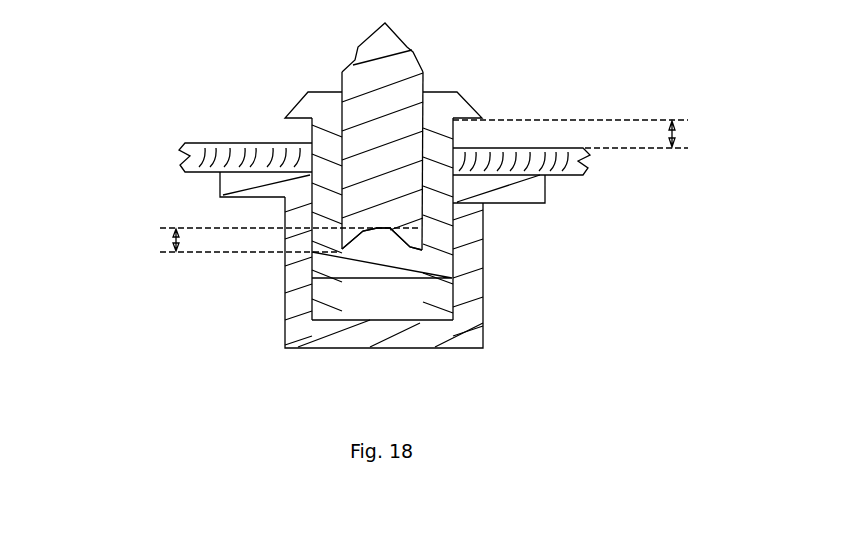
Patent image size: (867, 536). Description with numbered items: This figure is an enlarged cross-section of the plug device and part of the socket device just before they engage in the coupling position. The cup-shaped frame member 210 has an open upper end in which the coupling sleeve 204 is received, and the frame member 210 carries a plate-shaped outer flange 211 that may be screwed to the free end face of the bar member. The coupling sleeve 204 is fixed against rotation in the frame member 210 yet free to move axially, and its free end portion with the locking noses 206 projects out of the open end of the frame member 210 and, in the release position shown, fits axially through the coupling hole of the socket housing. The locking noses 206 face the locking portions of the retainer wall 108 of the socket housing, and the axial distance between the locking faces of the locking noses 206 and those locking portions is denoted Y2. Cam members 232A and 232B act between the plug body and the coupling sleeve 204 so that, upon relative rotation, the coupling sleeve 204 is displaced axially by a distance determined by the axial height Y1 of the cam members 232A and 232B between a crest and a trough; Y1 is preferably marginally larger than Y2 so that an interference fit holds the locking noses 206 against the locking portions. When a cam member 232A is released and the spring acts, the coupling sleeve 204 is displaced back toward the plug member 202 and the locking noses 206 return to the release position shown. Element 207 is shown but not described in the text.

The plug member 202 is at (368, 109).
The coupling sleeve 204 is at (330, 127).
The locking noses 206 is at (457, 108).
The insert sleeve 207 is at (463, 123).
The retainer wall 108 is at (185, 170).
The outer flange 211 is at (530, 188).
The cam member 232A is at (414, 248).
The cam member 232B is at (382, 239).
The frame member 210 is at (467, 312).
The axial height of cam members Y1 is at (173, 243).
The axial distance Y2 is at (678, 134).